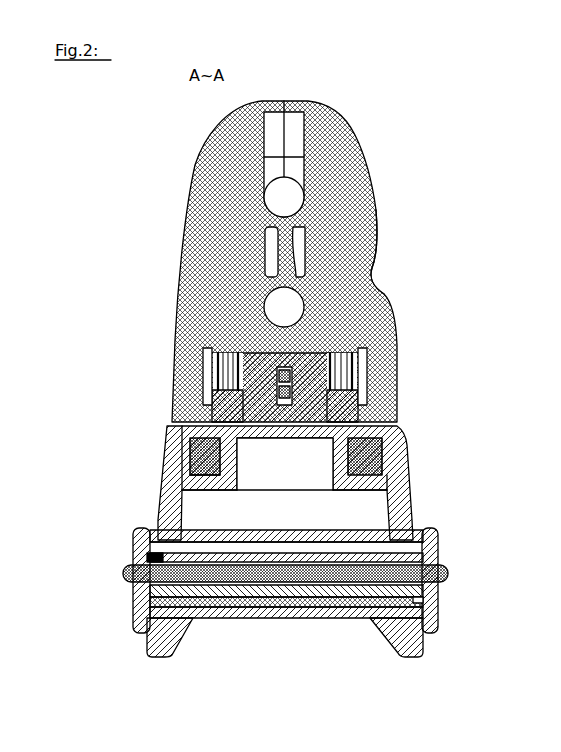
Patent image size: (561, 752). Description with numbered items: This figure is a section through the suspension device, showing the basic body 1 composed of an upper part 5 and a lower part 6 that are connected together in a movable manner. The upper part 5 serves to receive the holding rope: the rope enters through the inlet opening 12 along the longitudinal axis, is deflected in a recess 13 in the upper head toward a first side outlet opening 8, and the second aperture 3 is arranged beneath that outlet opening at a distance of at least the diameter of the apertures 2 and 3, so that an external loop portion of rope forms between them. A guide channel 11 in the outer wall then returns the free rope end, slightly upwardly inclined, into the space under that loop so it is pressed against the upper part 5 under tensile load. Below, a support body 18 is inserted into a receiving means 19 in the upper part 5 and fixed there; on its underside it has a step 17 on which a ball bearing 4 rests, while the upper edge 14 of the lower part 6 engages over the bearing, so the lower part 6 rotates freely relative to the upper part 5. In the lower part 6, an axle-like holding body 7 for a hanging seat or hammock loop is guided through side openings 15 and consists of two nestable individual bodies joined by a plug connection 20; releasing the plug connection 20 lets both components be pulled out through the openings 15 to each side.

The basic body 1 is at (313, 362).
The aperture 2 is at (363, 237).
The second aperture 3 is at (291, 306).
The ball bearing 4 is at (240, 456).
The upper part 5 is at (332, 261).
The lower part 6 is at (328, 483).
The axle-like holding body 7 is at (285, 619).
The first side outlet opening 8 is at (353, 185).
The guide channel 11 is at (439, 252).
The inlet opening 12 is at (336, 114).
The recess 13 is at (339, 150).
The upper edge 14 is at (216, 388).
The side openings 15 is at (340, 572).
The step 17 is at (234, 500).
The support body 18 is at (355, 389).
The receiving means 19 is at (232, 364).
The plug connection 20 is at (349, 621).